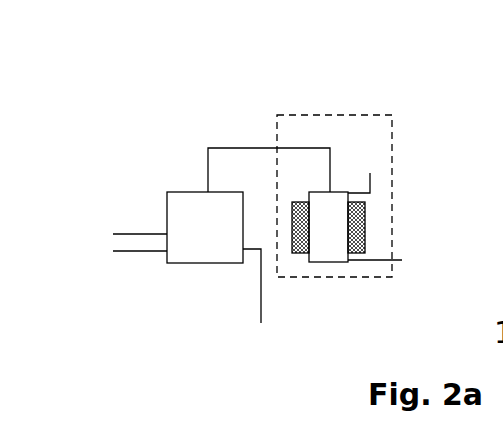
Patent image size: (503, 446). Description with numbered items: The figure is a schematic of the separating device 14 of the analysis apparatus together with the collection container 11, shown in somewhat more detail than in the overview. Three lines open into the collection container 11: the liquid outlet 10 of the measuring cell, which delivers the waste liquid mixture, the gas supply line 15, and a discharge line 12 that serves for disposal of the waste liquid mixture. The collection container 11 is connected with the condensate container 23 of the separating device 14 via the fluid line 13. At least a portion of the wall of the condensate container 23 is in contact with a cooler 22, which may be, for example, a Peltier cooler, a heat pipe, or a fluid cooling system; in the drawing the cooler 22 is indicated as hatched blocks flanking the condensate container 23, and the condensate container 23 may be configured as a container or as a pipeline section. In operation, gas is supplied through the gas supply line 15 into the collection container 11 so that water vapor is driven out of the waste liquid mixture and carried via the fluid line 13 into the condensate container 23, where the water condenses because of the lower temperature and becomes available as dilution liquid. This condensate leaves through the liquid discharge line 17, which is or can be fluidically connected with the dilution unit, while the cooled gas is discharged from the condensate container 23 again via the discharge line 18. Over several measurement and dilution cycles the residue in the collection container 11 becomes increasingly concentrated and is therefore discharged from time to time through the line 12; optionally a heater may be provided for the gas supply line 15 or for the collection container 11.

The liquid outlet 10 is at (130, 233).
The collection container 11 is at (220, 248).
The discharge line 12 is at (260, 318).
The fluid line 13 is at (210, 163).
The separating device 14 is at (330, 110).
The gas supply line 15 is at (140, 252).
The liquid discharge line 17 is at (383, 260).
The discharge line 18 is at (370, 173).
The cooler 22 is at (338, 197).
The condensate container 23 is at (358, 220).